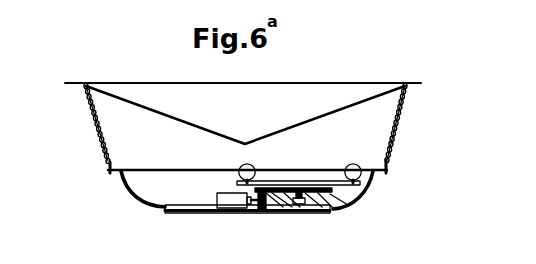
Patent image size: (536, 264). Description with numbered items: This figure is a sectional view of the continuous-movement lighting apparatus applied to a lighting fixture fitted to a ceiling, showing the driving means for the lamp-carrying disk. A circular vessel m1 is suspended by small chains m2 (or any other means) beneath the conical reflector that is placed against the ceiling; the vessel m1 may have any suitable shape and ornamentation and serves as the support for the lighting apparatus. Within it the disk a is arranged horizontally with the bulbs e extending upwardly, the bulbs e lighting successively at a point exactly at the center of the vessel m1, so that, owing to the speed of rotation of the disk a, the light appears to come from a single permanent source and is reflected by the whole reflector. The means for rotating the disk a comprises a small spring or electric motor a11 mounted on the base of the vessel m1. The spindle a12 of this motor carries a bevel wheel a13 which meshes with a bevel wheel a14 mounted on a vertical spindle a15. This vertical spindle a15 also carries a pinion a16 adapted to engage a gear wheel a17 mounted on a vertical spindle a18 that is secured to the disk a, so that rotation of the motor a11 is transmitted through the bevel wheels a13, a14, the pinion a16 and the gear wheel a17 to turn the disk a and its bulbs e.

The circular vessel m1 is at (182, 213).
The small chains m2 is at (411, 133).
The bulbs e is at (253, 166).
The disk a is at (350, 192).
The spring or electric motor a11 is at (227, 206).
The spindle a12 is at (249, 212).
The bevel wheel a13 is at (266, 211).
The bevel wheel a14 is at (288, 212).
The vertical spindle a15 is at (271, 212).
The pinion a16 is at (303, 208).
The gear wheel a17 is at (322, 190).
The vertical spindle a18 is at (290, 206).